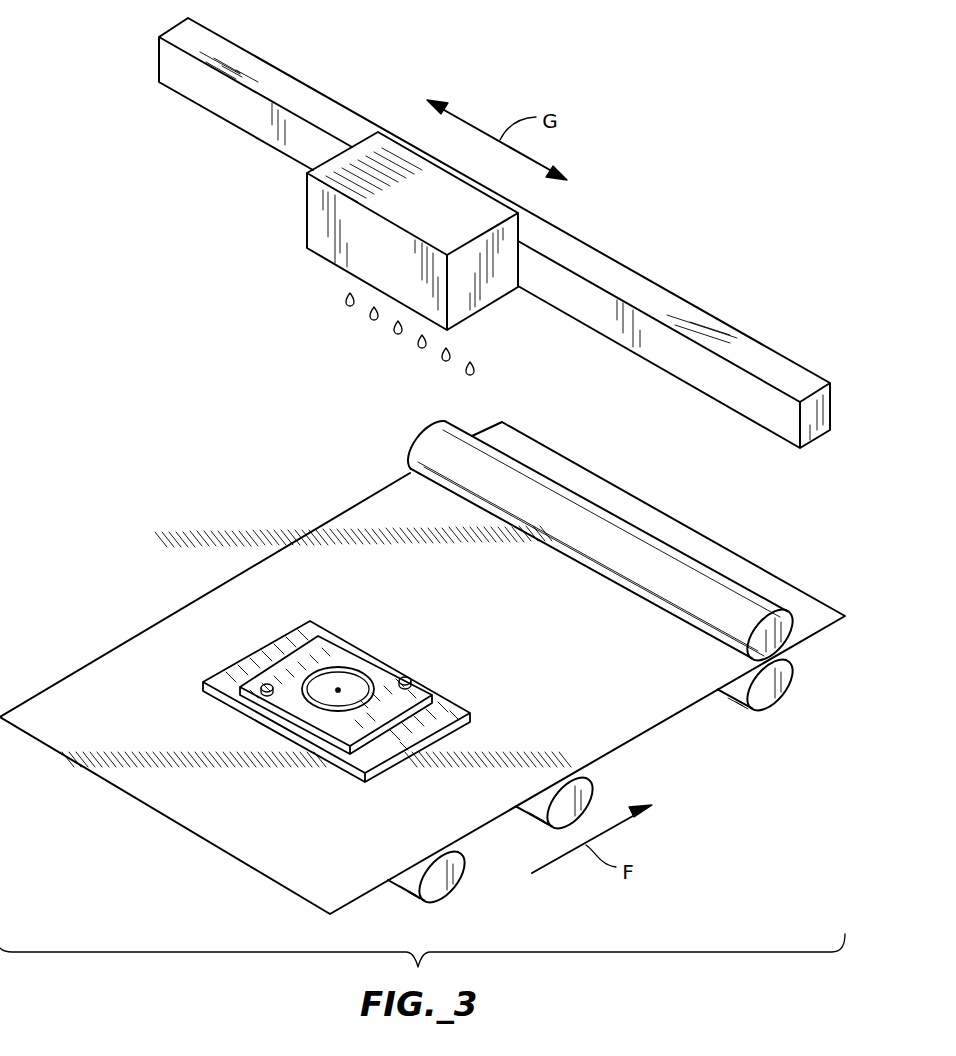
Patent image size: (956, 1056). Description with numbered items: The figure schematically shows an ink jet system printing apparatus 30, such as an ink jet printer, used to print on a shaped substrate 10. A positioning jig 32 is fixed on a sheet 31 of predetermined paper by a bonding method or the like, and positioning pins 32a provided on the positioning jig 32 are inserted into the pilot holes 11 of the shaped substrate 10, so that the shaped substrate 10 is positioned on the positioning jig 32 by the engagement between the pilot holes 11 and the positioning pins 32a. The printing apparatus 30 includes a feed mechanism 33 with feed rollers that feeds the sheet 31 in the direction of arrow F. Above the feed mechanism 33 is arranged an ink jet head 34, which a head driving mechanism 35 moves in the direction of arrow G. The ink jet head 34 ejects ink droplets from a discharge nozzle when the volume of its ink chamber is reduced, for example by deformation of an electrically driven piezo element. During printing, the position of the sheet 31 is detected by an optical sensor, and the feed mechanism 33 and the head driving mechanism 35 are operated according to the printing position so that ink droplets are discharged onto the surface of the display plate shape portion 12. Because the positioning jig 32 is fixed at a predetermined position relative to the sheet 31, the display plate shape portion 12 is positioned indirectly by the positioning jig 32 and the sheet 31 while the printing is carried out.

The printing apparatus 30 is at (618, 62).
The head driving mechanism 35 is at (660, 284).
The ink jet head 34 is at (316, 224).
The feed mechanism 33 is at (782, 708).
The sheet 31 is at (248, 569).
The positioning jig 32 is at (348, 775).
The positioning pins 32a is at (409, 677).
The shaped substrate 10 is at (366, 655).
The display plate shape portion 12 is at (324, 678).
The pilot holes 11 is at (262, 697).